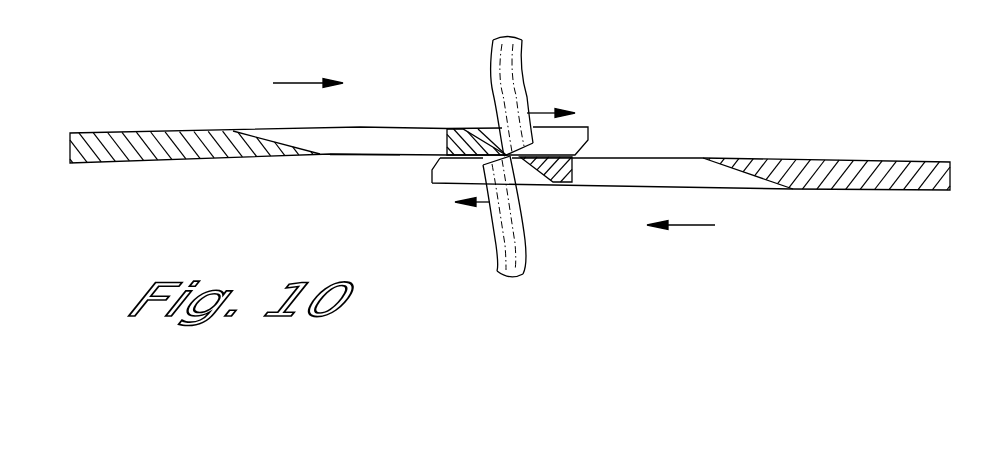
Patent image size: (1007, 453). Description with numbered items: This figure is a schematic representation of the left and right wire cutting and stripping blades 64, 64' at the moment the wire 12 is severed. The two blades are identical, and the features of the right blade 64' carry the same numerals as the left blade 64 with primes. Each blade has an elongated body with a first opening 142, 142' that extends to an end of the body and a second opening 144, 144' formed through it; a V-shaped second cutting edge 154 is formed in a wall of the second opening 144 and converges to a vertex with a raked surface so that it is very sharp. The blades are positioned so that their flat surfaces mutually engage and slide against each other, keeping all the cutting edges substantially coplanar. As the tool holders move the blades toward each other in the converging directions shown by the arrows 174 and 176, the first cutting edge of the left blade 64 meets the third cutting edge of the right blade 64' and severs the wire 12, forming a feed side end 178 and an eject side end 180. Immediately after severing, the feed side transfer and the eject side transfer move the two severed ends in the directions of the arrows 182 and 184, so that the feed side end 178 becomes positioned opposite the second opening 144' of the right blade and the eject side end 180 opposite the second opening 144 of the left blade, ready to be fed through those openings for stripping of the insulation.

The wire 12 is at (517, 166).
The left wire cutting and stripping blade 64 is at (258, 110).
The right wire cutting and stripping blade 64' is at (826, 132).
The first opening 142 is at (557, 121).
The first opening of right blade 142' is at (458, 190).
The second opening 144 is at (491, 106).
The second opening of right blade 144' is at (612, 132).
The second cutting edge 154 is at (353, 158).
The arrow indicating converging direction of left blade 174 is at (290, 83).
The arrow indicating converging direction of right blade 176 is at (688, 226).
The feed side end 178 is at (525, 95).
The eject side end 180 is at (495, 220).
The arrow indicating movement of feed side end 182 is at (545, 112).
The arrow indicating movement of eject side end 184 is at (480, 205).